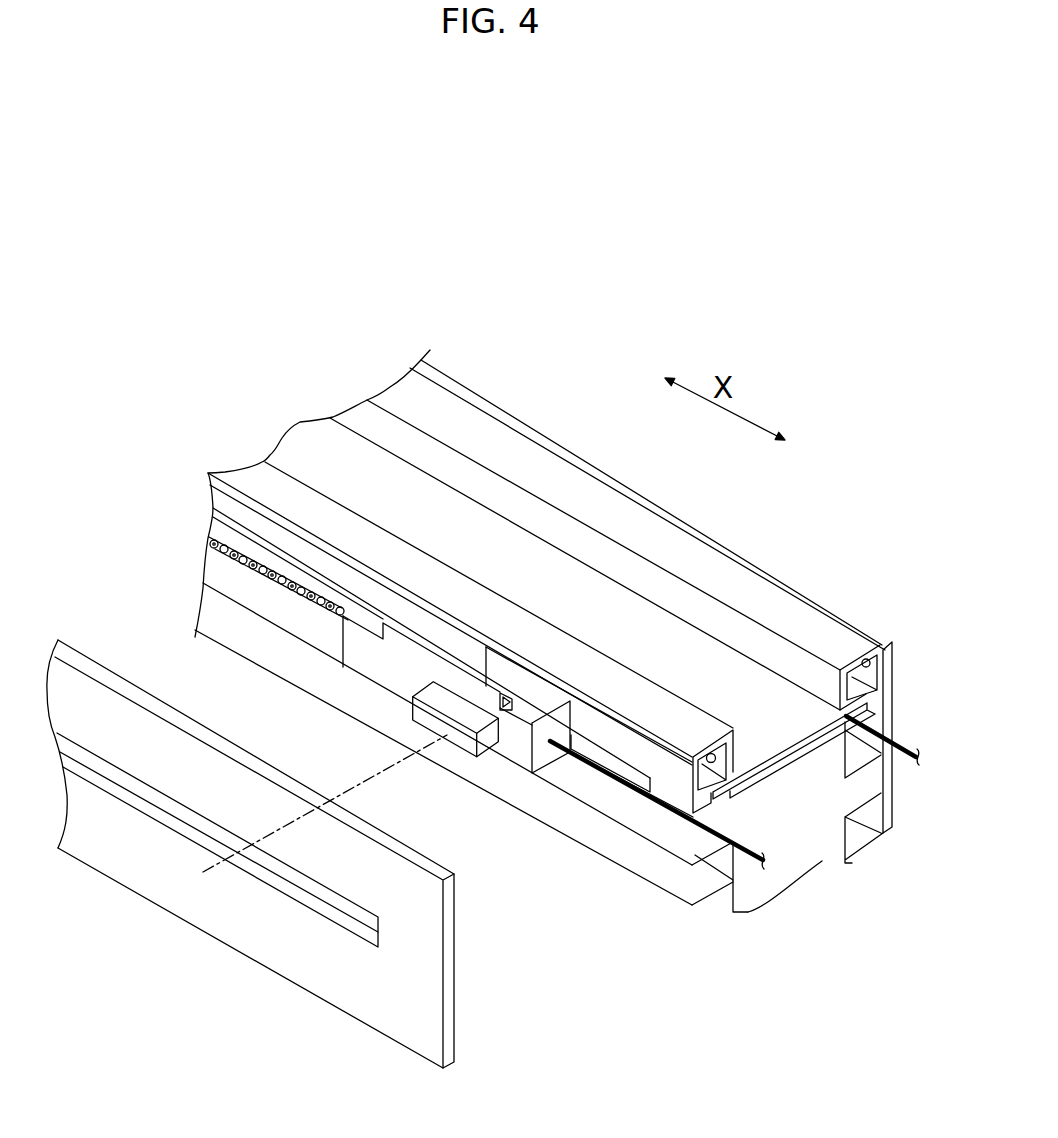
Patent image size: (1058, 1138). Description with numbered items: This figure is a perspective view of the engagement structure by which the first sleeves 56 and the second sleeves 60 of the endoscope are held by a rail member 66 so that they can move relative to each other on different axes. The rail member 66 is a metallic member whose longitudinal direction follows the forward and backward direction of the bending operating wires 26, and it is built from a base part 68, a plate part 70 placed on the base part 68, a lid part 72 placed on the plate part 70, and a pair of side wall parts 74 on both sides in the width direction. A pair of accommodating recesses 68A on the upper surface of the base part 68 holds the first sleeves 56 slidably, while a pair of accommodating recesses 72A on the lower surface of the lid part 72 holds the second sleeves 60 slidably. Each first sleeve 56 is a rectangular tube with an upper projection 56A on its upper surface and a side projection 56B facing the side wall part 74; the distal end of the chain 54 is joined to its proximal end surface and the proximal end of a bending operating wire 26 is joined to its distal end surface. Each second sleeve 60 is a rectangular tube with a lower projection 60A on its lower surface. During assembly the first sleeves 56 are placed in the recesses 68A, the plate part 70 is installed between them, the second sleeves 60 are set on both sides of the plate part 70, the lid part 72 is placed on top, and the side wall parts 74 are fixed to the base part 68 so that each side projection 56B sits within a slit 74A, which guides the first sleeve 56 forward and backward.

The bending operating wire 26 is at (907, 759).
The chain 54 is at (270, 584).
The first sleeve 56 is at (364, 668).
The upper projection 56A is at (505, 710).
The side projection 56B is at (450, 740).
The second sleeve 60 is at (633, 749).
The lower projection 60A is at (877, 708).
The rail member 66 is at (841, 398).
The base part 68 is at (821, 860).
The accommodating recess 68A is at (855, 764).
The plate part 70 is at (787, 754).
The lid part 72 is at (821, 635).
The accommodating recess 72A is at (853, 660).
The side wall part 74 is at (516, 423).
The slit 74A is at (377, 923).